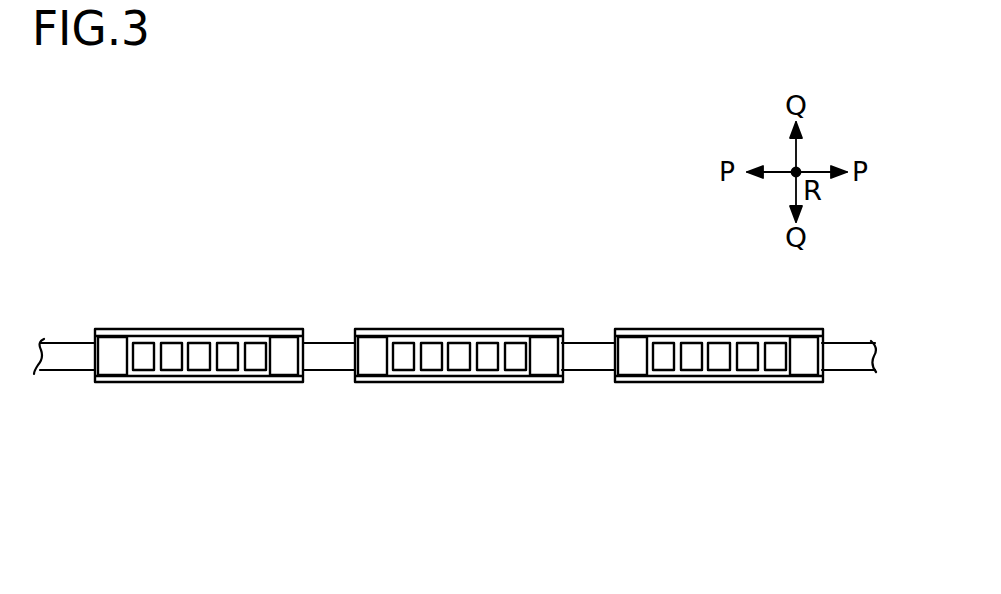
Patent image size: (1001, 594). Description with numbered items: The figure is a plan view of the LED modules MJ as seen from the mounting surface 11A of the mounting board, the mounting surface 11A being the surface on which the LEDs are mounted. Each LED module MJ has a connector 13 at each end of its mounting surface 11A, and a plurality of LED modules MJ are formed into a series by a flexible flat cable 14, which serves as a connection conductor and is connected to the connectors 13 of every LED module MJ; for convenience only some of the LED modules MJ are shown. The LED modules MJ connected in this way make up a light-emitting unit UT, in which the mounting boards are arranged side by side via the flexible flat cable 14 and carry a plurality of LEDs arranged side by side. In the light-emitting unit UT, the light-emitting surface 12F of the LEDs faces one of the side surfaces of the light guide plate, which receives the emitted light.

The light-emitting unit UT is at (122, 302).
The flexible flat cable 14 is at (828, 470).
The LED module MJ is at (240, 495).
The connector 13 is at (259, 469).
The mounting surface 11A is at (146, 358).
The light-emitting surface 12F is at (706, 454).